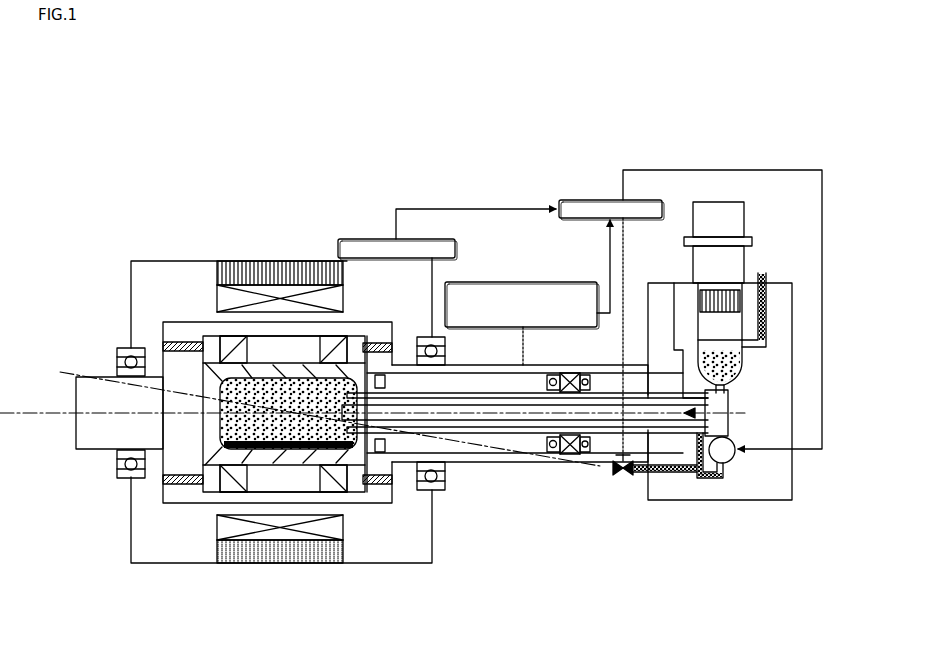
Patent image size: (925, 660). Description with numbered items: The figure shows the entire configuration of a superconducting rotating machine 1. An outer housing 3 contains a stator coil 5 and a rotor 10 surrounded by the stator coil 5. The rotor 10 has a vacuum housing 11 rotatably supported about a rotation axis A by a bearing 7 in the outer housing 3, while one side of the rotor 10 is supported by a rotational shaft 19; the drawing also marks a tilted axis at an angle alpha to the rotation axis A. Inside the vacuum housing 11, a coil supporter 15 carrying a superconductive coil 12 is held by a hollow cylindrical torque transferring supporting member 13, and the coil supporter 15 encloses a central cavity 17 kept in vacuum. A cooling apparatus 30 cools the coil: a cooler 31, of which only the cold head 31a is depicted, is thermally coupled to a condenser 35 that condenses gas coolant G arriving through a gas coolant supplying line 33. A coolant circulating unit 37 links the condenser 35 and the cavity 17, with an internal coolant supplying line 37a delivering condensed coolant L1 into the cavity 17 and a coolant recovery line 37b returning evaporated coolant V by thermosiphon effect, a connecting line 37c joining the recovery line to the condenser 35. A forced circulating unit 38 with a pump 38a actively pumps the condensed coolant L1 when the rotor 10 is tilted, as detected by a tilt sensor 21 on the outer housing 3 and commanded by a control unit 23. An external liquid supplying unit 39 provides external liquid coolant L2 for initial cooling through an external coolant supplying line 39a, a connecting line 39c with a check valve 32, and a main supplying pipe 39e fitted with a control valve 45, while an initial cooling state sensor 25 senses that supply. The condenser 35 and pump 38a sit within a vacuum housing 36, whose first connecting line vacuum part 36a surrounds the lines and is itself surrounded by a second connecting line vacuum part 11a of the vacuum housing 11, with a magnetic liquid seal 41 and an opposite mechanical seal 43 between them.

The superconducting rotating machine 1 is at (198, 206).
The outer housing 3 is at (147, 261).
The stator coil 5 is at (276, 290).
The bearing 7 is at (445, 482).
The rotor 10 is at (399, 512).
The vacuum housing 11 is at (392, 505).
The second connecting line vacuum part 11a is at (476, 365).
The superconductive coil 12 is at (330, 312).
The torque transferring supporting member 13 is at (176, 486).
The coil supporter 15 is at (212, 345).
The cavity 17 is at (283, 447).
The rotational shaft 19 is at (97, 440).
The tilt sensor 21 is at (340, 238).
The control unit 23 is at (575, 196).
The initial cooling state sensor 25 is at (565, 281).
The cooling apparatus 30 is at (725, 348).
The cooler 31 is at (749, 199).
The cold head 31a is at (708, 204).
The check valve 32 is at (710, 480).
The gas coolant supplying line 33 is at (796, 300).
The condenser 35 is at (770, 325).
The vacuum housing 36 is at (795, 430).
The first connecting line vacuum part 36a is at (606, 371).
The coolant circulating unit 37 is at (535, 460).
The internal coolant supplying line 37a is at (556, 434).
The coolant recovery line 37b is at (516, 434).
The connecting line 37c is at (672, 293).
The forced circulating unit 38 is at (729, 463).
The pump 38a is at (736, 460).
The external liquid supplying unit 39 is at (727, 407).
The external coolant supplying line 39a is at (729, 441).
The connecting line 39c is at (670, 500).
The main supplying pipe 39e is at (641, 472).
The magnetic liquid seal 41 is at (563, 456).
The mechanical seal 43 is at (394, 378).
The control valve 45 is at (613, 471).
The rotation axis A is at (28, 380).
The gas coolant G is at (780, 283).
The condensed coolant L1 is at (297, 447).
The external liquid coolant L2 is at (697, 468).
The evaporated coolant V is at (250, 450).
The tilt angle alpha is at (190, 399).